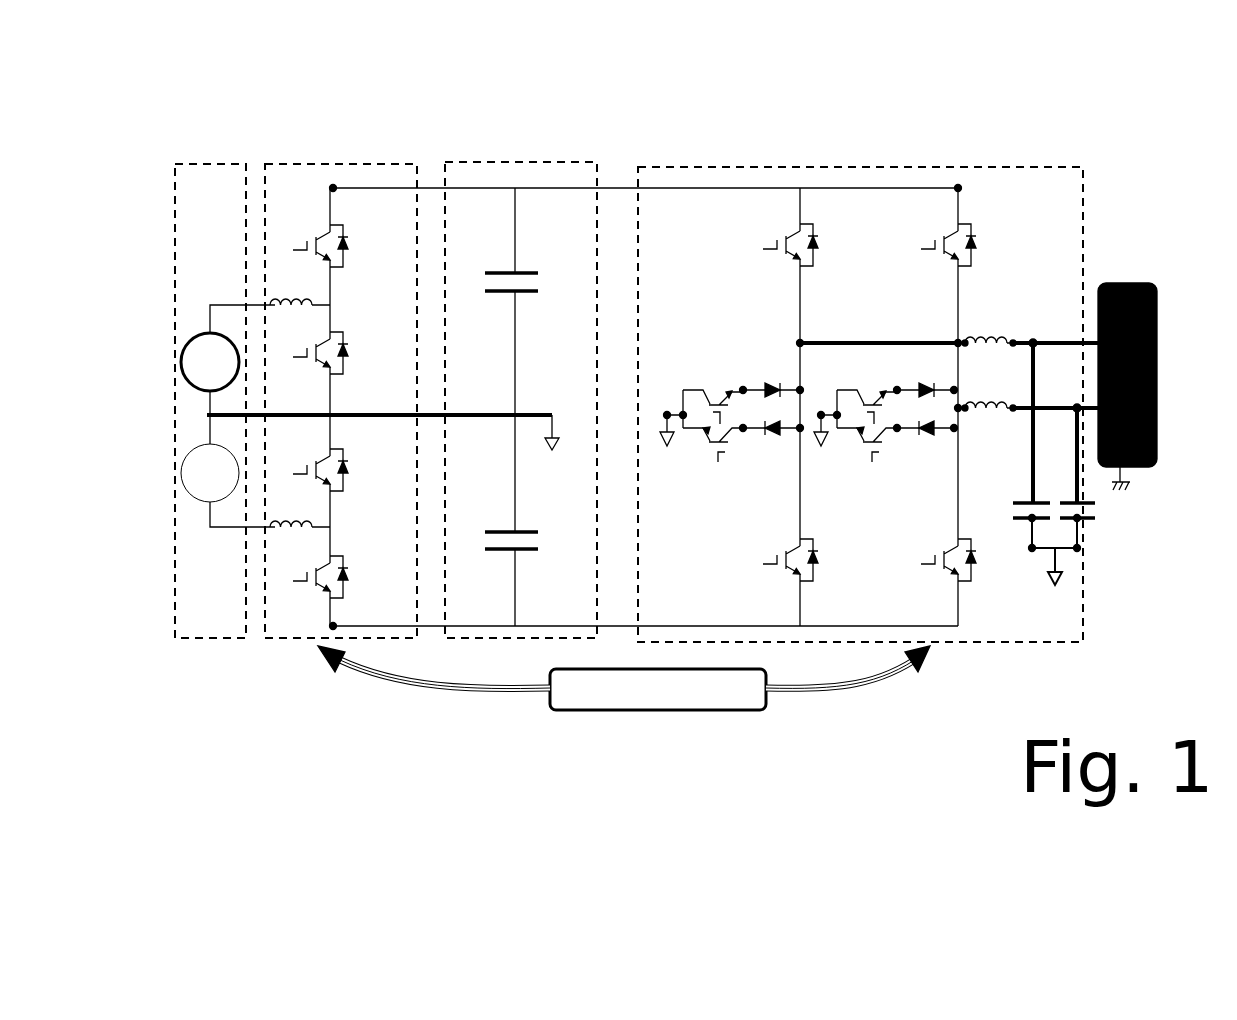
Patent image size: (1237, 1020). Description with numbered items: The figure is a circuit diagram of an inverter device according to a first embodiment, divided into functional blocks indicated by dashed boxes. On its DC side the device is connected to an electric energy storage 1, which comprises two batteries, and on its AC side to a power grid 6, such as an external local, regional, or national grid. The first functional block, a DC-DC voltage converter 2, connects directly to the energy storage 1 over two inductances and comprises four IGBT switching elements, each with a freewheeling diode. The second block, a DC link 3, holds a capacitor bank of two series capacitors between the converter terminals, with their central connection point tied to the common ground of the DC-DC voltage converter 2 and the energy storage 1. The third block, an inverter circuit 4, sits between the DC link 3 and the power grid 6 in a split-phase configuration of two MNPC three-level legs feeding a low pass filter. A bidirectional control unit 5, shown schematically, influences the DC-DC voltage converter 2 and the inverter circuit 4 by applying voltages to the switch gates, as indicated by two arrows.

The electric energy storage 1 is at (205, 164).
The DC-DC voltage converter 2 is at (370, 162).
The DC link 3 is at (548, 162).
The inverter circuit 4 is at (1033, 167).
The bidirectional control unit 5 is at (630, 710).
The power grid 6 is at (1118, 283).